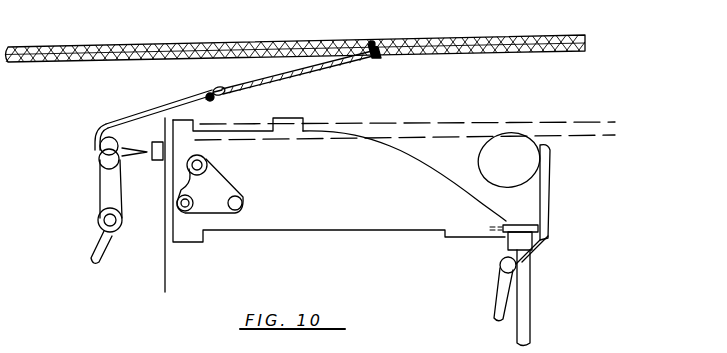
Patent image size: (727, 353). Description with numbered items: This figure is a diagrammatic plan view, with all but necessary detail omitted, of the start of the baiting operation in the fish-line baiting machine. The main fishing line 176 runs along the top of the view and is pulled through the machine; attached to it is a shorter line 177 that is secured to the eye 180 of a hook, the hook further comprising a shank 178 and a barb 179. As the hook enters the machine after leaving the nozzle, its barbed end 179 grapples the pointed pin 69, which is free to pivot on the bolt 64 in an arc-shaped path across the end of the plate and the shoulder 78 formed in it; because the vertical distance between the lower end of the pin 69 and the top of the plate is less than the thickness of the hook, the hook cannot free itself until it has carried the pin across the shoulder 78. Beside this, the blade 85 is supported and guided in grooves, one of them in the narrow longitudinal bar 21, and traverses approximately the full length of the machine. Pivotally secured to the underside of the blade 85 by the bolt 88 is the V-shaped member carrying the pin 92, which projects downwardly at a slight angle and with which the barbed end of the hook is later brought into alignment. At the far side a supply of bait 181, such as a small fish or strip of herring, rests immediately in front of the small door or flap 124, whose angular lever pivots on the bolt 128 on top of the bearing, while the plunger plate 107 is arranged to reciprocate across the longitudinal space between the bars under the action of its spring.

The main fishing line 176 is at (452, 36).
The shorter line 177 is at (289, 70).
The eye 180 is at (212, 91).
The shank 178 is at (164, 106).
The pointed pin 69 is at (110, 132).
The barb 179 is at (100, 143).
The shoulder 78 is at (151, 151).
The bolt 64 is at (99, 218).
The blade 85 is at (283, 218).
The narrow longitudinal bar 21 is at (398, 125).
The bolt 88 is at (243, 200).
The pin 92 is at (203, 162).
The bait 181 is at (512, 152).
The door or flap 124 is at (549, 170).
The plunger plate 107 is at (505, 222).
The bolt 128 is at (502, 263).